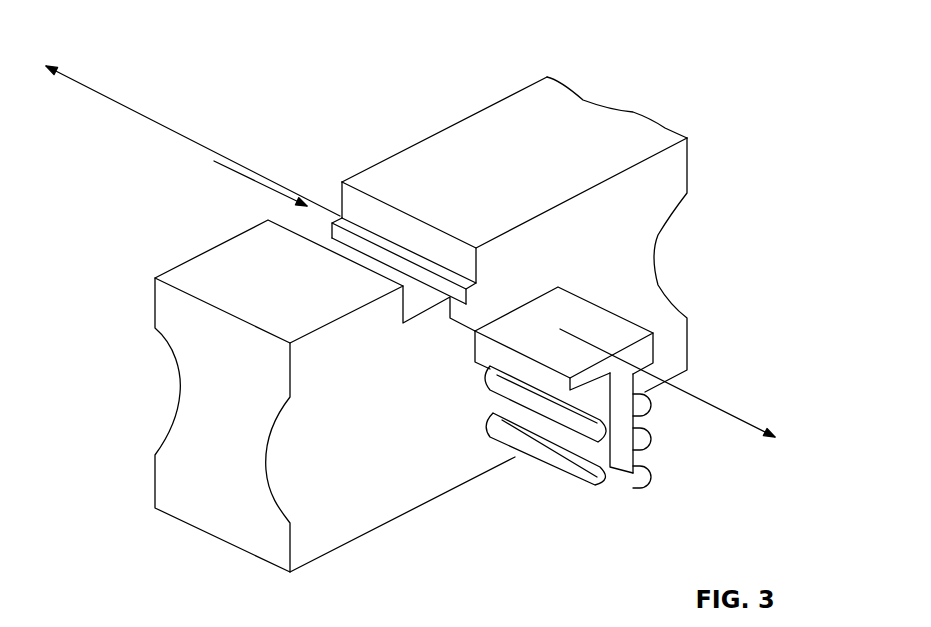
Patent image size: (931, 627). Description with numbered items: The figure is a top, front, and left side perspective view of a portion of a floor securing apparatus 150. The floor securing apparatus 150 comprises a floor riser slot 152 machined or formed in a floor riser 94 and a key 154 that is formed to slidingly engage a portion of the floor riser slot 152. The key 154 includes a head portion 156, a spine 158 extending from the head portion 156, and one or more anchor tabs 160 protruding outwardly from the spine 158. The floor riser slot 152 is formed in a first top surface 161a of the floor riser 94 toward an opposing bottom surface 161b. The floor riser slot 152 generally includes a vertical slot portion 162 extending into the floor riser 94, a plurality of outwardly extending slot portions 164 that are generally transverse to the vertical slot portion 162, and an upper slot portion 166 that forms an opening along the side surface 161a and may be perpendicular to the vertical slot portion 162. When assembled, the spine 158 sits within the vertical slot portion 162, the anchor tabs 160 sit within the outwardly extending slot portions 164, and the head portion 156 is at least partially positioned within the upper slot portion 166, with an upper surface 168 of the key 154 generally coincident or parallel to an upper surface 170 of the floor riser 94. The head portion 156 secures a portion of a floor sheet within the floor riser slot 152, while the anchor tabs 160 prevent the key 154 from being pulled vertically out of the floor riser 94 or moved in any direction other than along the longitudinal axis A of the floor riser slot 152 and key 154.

The longitudinal axis A is at (112, 96).
The floor riser 94 is at (658, 254).
The floor securing apparatus 150 is at (313, 131).
The floor riser slot 152 is at (228, 168).
The key 154 is at (652, 400).
The head portion 156 is at (614, 371).
The spine 158 is at (640, 437).
The anchor tabs 160 is at (587, 483).
The first top surface 161a is at (645, 128).
The bottom surface 161b is at (347, 541).
The vertical slot portion 162 is at (473, 318).
The outwardly extending slot portions 164 is at (495, 300).
The upper slot portion 166 is at (340, 250).
The upper surface of the key 168 is at (605, 325).
The upper surface of the floor riser 170 is at (448, 133).